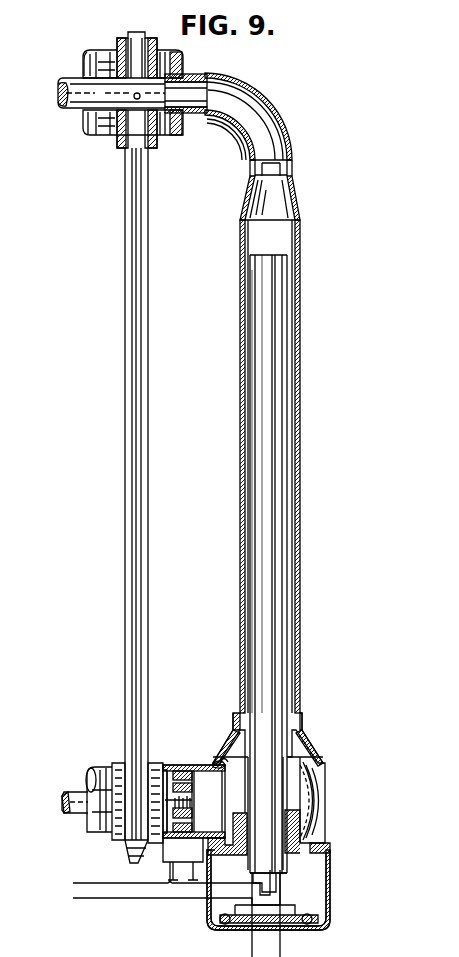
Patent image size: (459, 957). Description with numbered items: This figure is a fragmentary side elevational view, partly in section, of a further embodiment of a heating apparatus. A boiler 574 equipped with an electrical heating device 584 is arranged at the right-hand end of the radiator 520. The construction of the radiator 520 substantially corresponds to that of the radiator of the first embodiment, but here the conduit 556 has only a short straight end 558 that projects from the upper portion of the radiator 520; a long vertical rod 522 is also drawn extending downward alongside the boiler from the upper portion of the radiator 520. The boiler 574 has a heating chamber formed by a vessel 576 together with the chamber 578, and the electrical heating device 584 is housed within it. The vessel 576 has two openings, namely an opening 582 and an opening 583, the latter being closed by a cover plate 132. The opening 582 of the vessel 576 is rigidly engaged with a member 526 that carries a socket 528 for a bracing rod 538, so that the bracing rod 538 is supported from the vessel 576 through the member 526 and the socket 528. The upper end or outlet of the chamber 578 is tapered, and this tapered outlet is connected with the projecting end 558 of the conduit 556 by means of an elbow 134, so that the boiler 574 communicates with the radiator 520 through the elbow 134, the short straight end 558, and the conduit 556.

The radiator 520 is at (102, 43).
The conduit 556 is at (80, 100).
The short straight end 558 is at (206, 79).
The elbow 134 is at (278, 125).
The rod 522 is at (125, 389).
The electrical heating device 584 is at (276, 356).
The boiler 574 is at (300, 407).
The heating chamber 578 is at (299, 499).
The vessel 576 is at (312, 752).
The cover plate 132 is at (326, 807).
The opening 583 is at (309, 791).
The opening 582 is at (220, 762).
The member 526 is at (173, 766).
The socket 528 is at (197, 783).
The bracing rod 538 is at (77, 812).